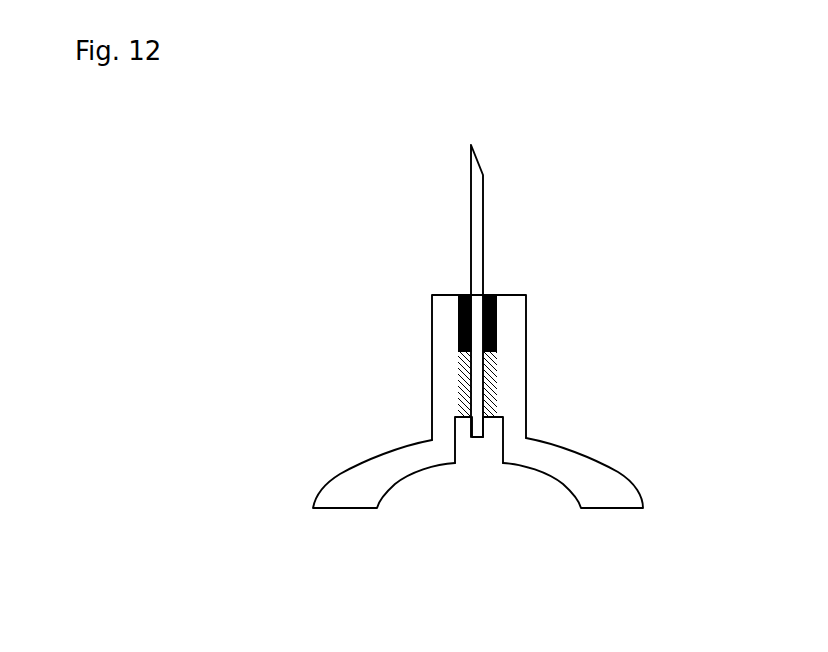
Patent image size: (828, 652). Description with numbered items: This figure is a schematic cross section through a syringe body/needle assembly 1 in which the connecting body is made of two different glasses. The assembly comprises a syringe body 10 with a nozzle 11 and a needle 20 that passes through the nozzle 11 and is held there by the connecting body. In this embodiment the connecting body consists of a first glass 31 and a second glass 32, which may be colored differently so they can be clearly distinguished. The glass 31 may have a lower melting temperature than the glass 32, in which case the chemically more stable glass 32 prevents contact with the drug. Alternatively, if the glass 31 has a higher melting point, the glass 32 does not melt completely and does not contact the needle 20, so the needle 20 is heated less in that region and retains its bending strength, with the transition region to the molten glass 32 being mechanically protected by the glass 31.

The syringe body/needle assembly 1 is at (647, 174).
The syringe body 10 is at (355, 493).
The nozzle 11 is at (513, 408).
The needle 20 is at (478, 218).
The glass 31 is at (497, 340).
The glass 32 is at (458, 371).